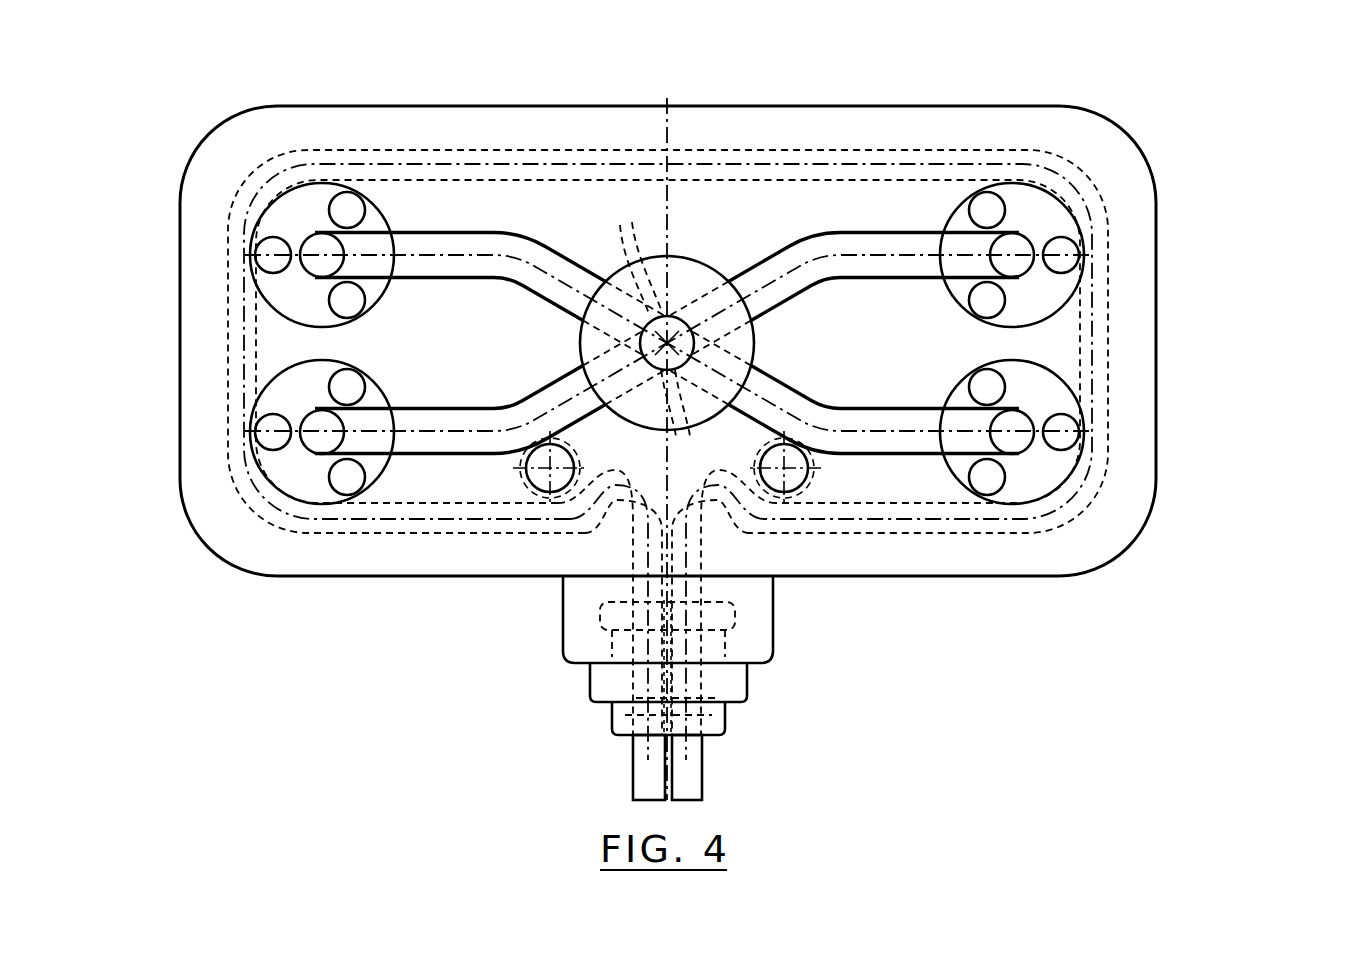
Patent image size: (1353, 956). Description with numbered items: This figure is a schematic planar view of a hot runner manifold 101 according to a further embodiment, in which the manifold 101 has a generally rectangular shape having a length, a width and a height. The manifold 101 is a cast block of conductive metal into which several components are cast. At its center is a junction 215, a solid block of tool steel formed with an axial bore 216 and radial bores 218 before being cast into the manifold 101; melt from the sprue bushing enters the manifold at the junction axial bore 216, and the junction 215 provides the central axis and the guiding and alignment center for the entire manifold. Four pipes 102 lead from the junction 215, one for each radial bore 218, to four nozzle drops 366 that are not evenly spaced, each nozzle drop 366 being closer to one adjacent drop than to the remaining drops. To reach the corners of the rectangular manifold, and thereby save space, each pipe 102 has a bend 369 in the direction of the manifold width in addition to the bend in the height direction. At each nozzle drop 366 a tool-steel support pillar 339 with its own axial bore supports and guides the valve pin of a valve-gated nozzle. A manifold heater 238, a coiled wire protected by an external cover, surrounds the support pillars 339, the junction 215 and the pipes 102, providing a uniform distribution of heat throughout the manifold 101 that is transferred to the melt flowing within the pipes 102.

The hot runner manifold 101 is at (1172, 175).
The pipe 102 is at (437, 242).
The junction 215 is at (698, 280).
The axial bore 216 is at (663, 337).
The radial bore 218 is at (632, 262).
The manifold heater 238 is at (233, 343).
The support pillar 339 is at (287, 297).
The nozzle drop 366 is at (313, 266).
The bend 369 is at (523, 233).